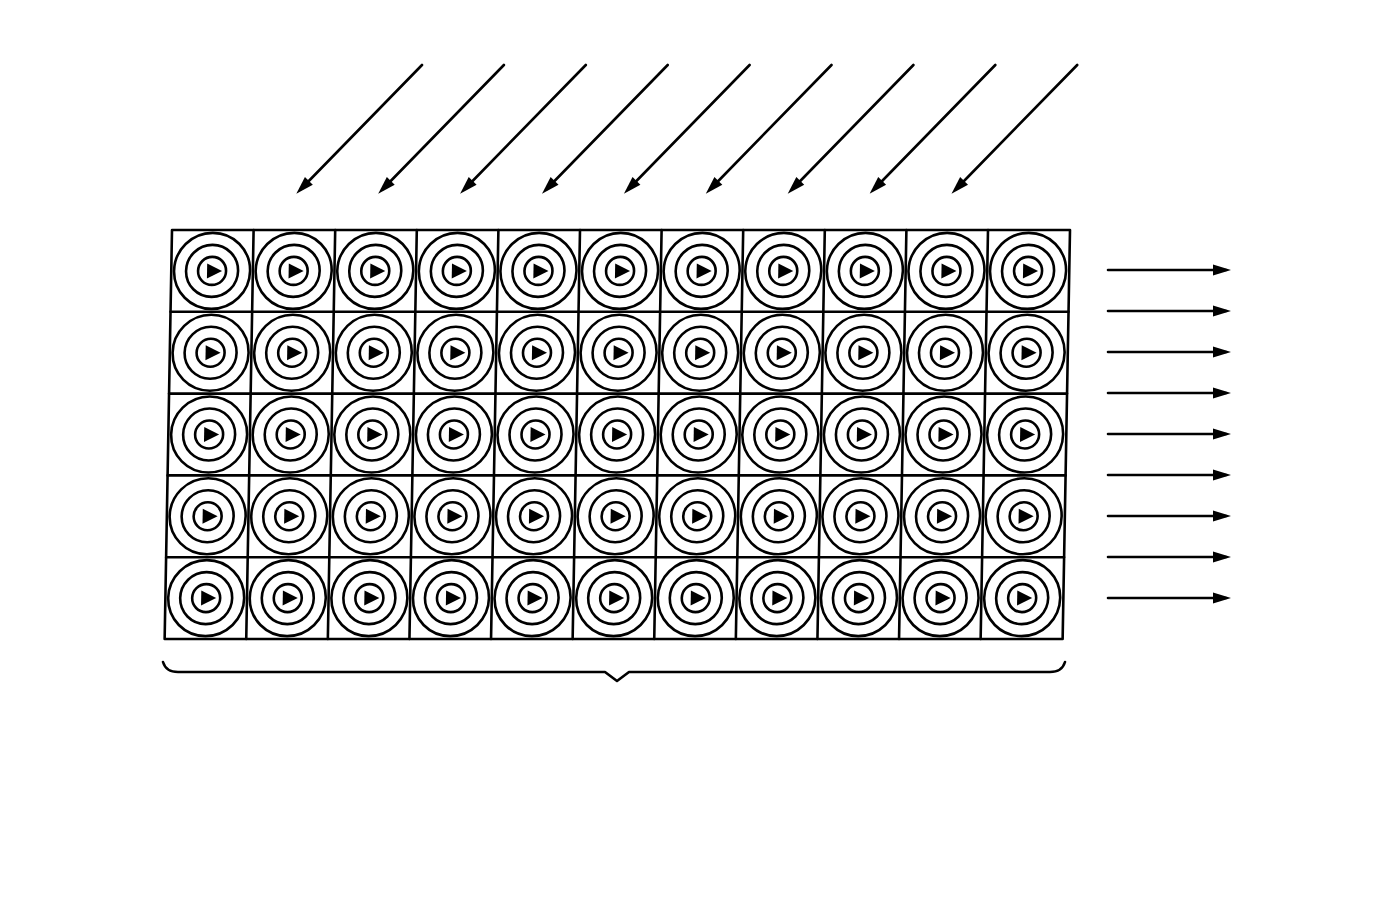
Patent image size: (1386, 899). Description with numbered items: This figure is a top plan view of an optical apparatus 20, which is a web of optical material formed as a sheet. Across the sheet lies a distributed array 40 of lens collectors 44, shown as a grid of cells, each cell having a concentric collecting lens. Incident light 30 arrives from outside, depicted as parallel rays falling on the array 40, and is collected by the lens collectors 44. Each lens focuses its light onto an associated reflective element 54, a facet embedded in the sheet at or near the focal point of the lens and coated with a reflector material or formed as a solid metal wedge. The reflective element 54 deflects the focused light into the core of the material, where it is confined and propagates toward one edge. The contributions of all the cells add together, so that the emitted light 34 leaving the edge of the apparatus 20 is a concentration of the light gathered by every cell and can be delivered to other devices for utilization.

The optical apparatus 20 is at (1194, 136).
The incident light 30 is at (349, 133).
The emitted light 34 is at (1176, 268).
The distributed array 40 is at (614, 701).
The lens collector 44 is at (170, 548).
The reflective element 54 is at (190, 363).